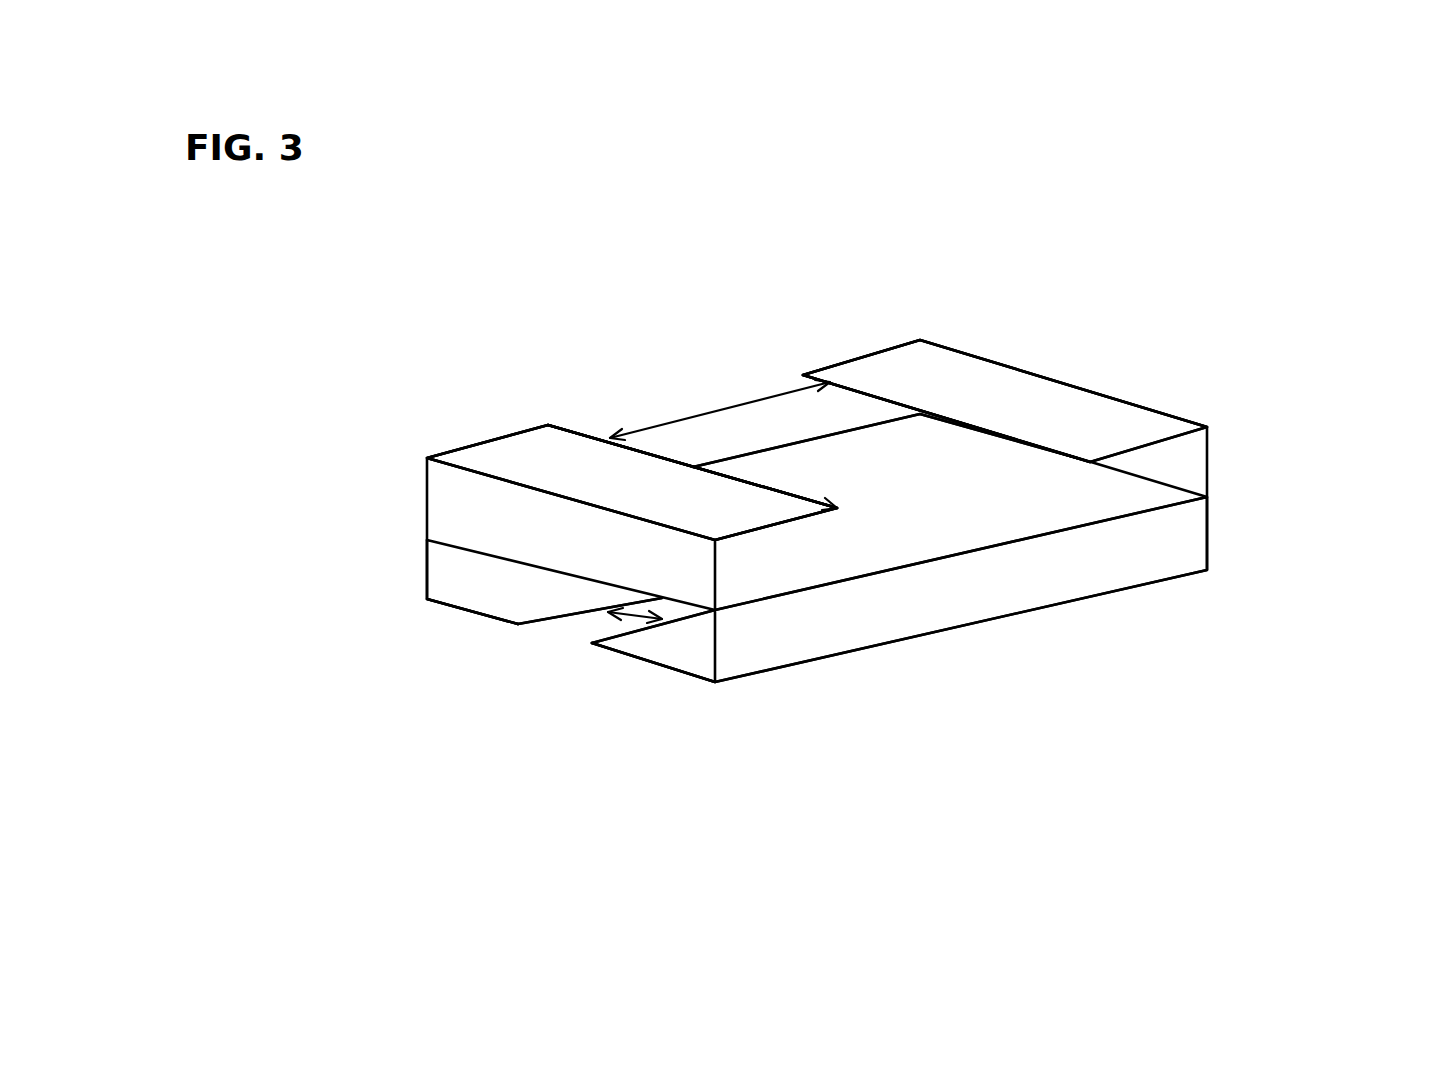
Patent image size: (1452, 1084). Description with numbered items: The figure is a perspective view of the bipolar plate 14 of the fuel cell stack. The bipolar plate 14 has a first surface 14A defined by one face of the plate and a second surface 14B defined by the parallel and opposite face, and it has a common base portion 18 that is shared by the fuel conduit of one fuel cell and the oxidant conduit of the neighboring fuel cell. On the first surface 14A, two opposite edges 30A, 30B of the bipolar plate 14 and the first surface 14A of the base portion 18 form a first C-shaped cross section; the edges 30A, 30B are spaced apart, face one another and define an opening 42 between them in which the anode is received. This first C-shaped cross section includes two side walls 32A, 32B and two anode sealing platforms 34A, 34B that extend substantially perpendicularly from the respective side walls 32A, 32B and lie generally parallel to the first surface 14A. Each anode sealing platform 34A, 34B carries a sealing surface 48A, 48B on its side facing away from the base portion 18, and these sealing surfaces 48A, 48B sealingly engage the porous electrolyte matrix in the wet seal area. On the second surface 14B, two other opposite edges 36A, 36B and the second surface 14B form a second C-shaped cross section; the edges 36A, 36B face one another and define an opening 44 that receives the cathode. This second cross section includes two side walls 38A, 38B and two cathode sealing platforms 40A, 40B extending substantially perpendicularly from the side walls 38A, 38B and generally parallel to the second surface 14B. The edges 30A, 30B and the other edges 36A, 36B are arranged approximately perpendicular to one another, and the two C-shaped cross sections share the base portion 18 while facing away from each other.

The bipolar plate 14 is at (1158, 145).
The first surface 14A is at (878, 398).
The second surface 14B is at (533, 610).
The base portion 18 is at (940, 508).
The opposite edge 30A is at (797, 463).
The opposite edge 30B is at (665, 455).
The side wall 32A is at (1210, 453).
The side wall 32B is at (457, 508).
The anode sealing platform 34A is at (947, 378).
The anode sealing platform 34B is at (592, 452).
The other opposite edge 36A is at (610, 625).
The other opposite edge 36B is at (557, 617).
The side wall 38A is at (865, 625).
The side wall 38B is at (455, 570).
The cathode sealing platform 40A is at (693, 650).
The cathode sealing platform 40B is at (477, 600).
The opening 42 is at (673, 425).
The opening 44 is at (643, 622).
The sealing surface 48A is at (1023, 410).
The sealing surface 48B is at (541, 458).